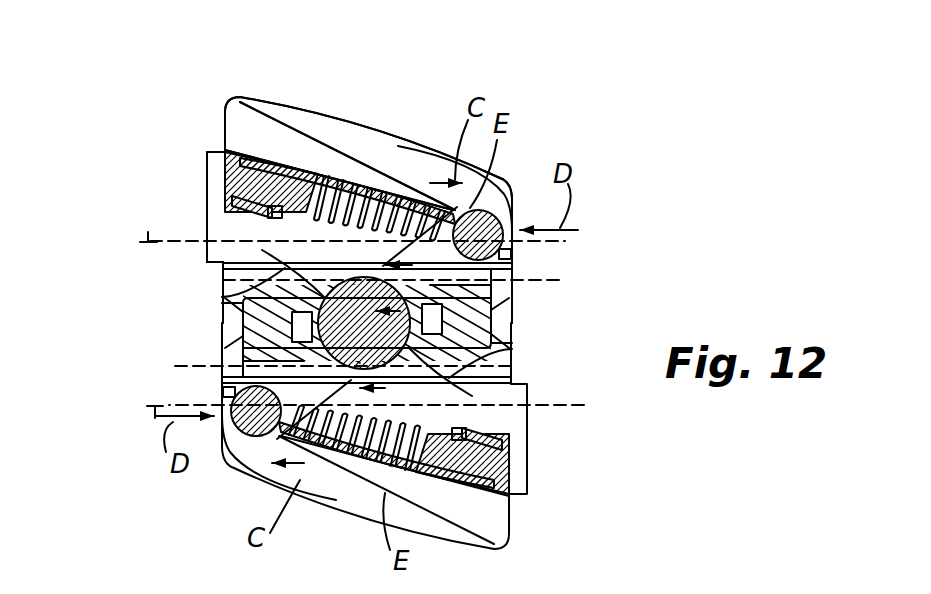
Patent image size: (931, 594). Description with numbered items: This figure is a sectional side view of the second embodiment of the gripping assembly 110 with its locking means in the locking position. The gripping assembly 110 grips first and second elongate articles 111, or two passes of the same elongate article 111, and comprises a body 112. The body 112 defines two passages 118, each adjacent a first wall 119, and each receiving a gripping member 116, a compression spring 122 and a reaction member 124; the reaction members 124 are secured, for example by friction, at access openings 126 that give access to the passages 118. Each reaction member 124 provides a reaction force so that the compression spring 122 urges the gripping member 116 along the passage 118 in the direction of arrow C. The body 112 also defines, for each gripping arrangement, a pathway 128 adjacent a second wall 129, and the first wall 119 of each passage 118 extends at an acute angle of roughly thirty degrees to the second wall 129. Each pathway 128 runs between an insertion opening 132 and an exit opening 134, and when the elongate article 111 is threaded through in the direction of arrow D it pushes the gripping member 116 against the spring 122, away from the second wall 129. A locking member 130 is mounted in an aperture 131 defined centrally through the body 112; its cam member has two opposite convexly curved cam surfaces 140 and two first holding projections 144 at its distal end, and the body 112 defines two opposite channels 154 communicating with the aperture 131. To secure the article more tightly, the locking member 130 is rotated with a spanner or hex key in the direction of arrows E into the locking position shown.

The gripping assembly 110 is at (200, 118).
The elongate article 111 is at (150, 236).
The body 112 is at (295, 97).
The gripping member 116 is at (507, 240).
The passage 118 is at (446, 205).
The first wall 119 is at (357, 198).
The compression spring 122 is at (371, 195).
The reaction member 124 is at (237, 125).
The access opening 126 is at (215, 222).
The pathway 128 is at (223, 299).
The second wall 129 is at (262, 258).
The locking member 130 is at (500, 297).
The aperture 131 is at (223, 356).
The insertion opening 132 is at (223, 394).
The exit opening 134 is at (230, 252).
The cam surface 140 is at (360, 285).
The first holding projection 144 is at (240, 322).
The channel 154 is at (225, 330).